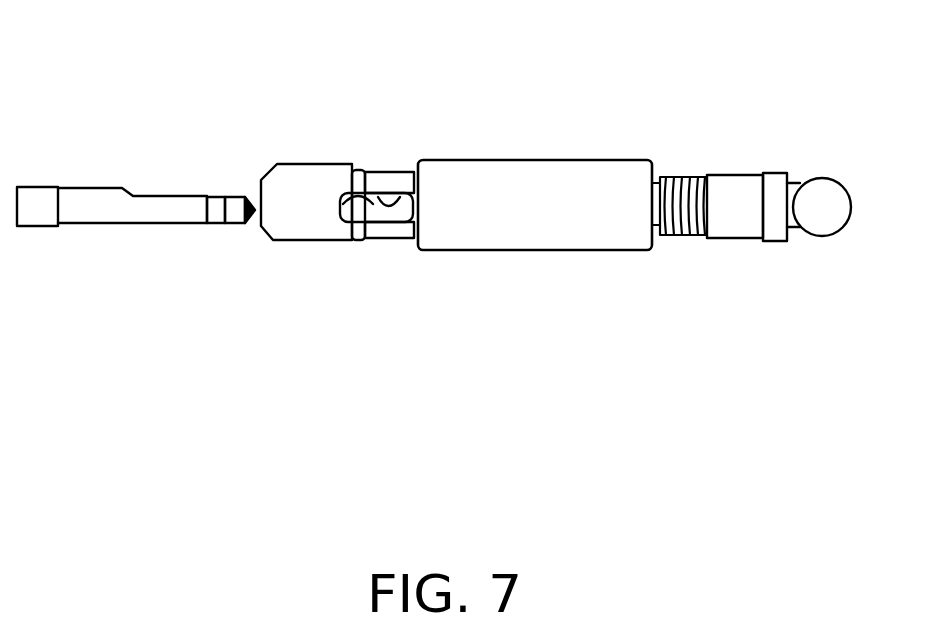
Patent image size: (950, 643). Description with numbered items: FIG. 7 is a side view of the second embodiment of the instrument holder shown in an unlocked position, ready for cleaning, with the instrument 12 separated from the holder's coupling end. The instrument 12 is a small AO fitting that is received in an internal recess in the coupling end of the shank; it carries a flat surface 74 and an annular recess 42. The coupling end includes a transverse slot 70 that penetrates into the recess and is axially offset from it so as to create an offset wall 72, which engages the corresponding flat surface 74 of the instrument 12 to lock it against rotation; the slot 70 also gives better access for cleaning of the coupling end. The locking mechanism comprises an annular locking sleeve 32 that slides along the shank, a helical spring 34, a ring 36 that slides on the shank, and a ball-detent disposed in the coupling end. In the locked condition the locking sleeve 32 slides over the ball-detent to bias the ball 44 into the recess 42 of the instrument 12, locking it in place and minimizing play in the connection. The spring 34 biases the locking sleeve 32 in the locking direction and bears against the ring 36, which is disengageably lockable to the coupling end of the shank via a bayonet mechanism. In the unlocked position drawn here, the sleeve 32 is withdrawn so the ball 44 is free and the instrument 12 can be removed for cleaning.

The instrument 12 is at (112, 208).
The flat surface 74 is at (193, 195).
The annular recess 42 is at (217, 224).
The offset wall 72 is at (340, 197).
The transverse slot 70 is at (384, 195).
The ball 44 is at (387, 238).
The annular locking sleeve 32 is at (558, 157).
The helical spring 34 is at (683, 177).
The ring 36 is at (740, 238).